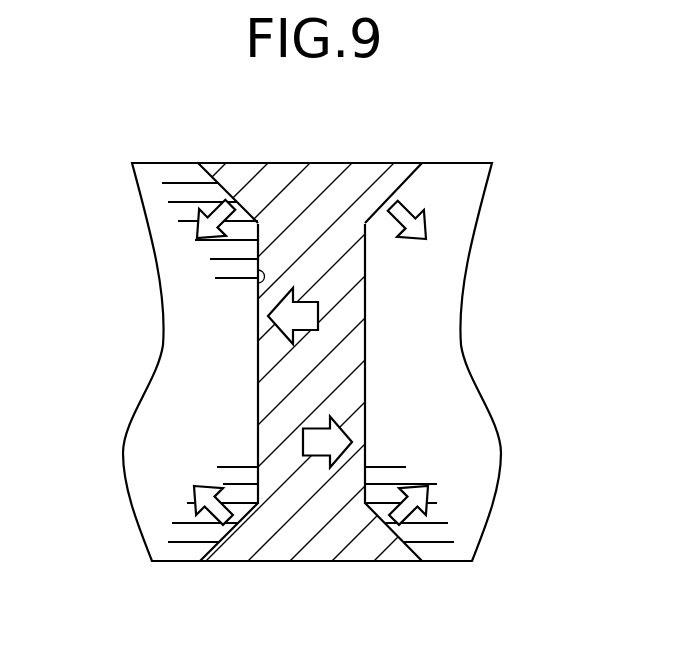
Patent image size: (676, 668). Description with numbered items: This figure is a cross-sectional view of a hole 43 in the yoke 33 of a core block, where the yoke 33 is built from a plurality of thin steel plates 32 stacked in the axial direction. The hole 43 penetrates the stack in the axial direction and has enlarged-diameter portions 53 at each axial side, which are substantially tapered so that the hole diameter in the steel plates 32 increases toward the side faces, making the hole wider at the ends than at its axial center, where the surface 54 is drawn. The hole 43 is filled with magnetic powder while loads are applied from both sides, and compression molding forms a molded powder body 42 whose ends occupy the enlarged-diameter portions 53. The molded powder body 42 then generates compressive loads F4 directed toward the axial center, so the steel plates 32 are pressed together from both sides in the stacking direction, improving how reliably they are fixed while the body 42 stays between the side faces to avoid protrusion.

The steel plate 32 is at (173, 192).
The yoke 33 is at (447, 267).
The molded powder body 42 is at (272, 400).
The hole 43 is at (258, 287).
The enlarged-diameter portion 53 is at (240, 184).
The top surface 54 is at (368, 177).
The compressive load F4 is at (408, 204).